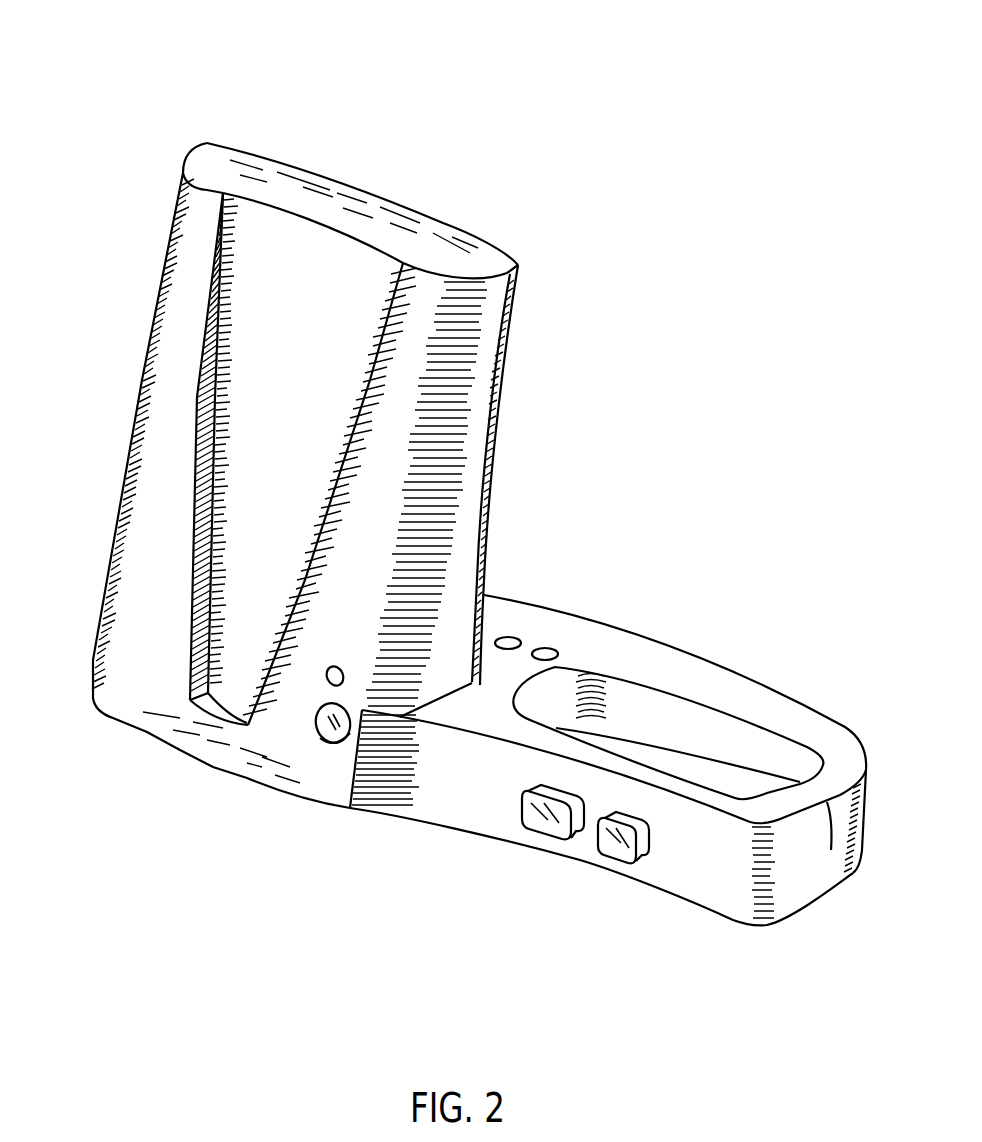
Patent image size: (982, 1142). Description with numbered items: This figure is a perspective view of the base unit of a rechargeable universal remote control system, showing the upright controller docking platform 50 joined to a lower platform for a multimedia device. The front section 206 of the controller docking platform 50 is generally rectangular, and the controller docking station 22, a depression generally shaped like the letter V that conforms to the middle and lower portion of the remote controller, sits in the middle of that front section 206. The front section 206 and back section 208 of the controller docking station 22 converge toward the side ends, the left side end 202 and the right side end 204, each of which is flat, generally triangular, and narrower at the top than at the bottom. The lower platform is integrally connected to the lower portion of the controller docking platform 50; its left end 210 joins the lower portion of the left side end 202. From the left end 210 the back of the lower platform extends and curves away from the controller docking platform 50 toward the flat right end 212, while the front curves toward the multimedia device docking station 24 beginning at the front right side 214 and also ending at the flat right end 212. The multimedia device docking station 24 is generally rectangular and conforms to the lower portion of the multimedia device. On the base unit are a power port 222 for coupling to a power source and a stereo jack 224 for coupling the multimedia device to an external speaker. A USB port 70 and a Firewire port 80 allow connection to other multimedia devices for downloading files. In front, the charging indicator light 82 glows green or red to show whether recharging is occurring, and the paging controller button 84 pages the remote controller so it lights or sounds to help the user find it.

The controller docking station 22 is at (300, 303).
The left side end 202 is at (198, 155).
The back section 208 is at (350, 181).
The controller docking platform 50 is at (459, 236).
The right side end 204 is at (499, 315).
The front section 206 is at (136, 571).
The left end 210 is at (173, 539).
The front right side 214 is at (351, 781).
The flat right end 212 is at (831, 850).
The power port 222 is at (509, 632).
The stereo jack 224 is at (549, 649).
The multimedia device docking station 24 is at (668, 689).
The charging indicator light 82 is at (327, 683).
The paging controller button 84 is at (326, 742).
The USB port 70 is at (531, 828).
The Firewire port 80 is at (619, 856).